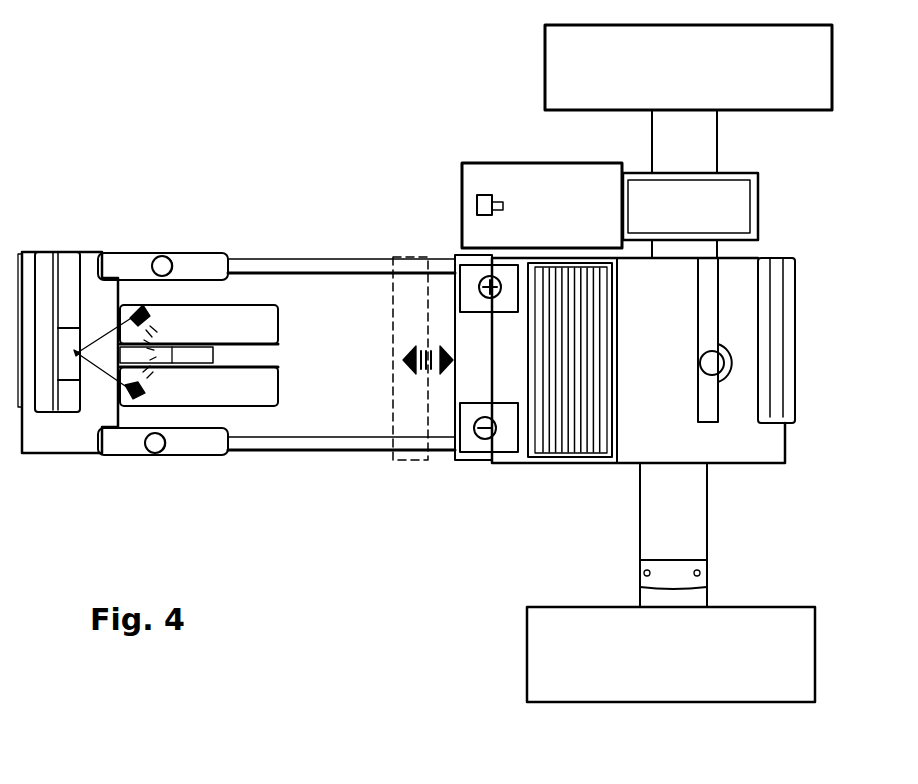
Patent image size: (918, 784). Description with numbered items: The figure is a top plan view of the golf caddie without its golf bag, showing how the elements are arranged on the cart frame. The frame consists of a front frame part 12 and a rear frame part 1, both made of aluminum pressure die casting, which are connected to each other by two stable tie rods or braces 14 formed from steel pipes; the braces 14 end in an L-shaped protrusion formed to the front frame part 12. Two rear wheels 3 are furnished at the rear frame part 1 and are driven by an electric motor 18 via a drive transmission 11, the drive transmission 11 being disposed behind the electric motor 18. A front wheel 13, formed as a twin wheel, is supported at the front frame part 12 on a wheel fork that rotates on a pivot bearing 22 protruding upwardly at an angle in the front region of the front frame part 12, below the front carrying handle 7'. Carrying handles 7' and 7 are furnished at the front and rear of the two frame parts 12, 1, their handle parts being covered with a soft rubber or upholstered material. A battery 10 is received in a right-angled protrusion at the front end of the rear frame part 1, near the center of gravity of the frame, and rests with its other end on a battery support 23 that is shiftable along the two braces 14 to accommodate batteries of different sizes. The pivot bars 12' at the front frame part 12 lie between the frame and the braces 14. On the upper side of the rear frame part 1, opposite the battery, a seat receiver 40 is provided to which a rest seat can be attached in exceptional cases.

The rear frame part 1 is at (618, 478).
The rear wheels 3 is at (563, 52).
The carrying handle 7 is at (801, 340).
The carrying handle 7' is at (57, 295).
The battery 10 is at (517, 463).
The drive transmission 11 is at (733, 197).
The front frame part 12 is at (96, 310).
The pivot bars 12' is at (163, 361).
The front wheel 13 is at (263, 323).
The tie rods or braces 14 is at (285, 267).
The electric motor 18 is at (470, 177).
The pivot bearing 22 is at (66, 336).
The battery support 23 is at (455, 463).
The seat receiver 40 is at (703, 565).